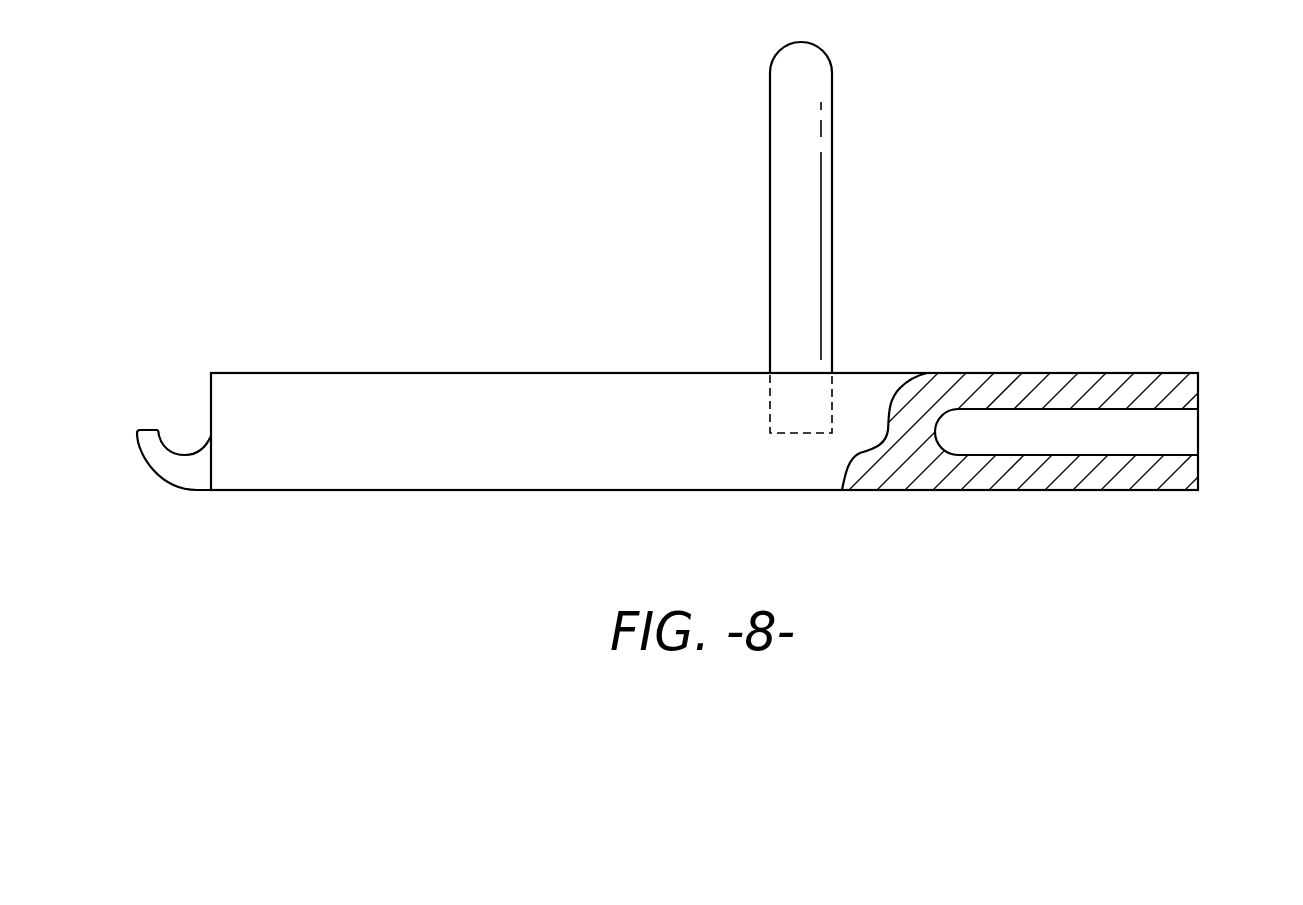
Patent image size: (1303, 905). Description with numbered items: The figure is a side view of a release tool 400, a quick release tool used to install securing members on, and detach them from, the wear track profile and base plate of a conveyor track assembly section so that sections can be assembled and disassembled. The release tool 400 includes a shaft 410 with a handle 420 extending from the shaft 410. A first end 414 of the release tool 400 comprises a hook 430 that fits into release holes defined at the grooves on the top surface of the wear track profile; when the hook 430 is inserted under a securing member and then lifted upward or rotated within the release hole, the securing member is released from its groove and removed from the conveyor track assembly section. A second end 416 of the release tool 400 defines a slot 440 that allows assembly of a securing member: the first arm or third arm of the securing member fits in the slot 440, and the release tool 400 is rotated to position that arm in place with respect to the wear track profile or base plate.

The release tool 400 is at (275, 136).
The shaft 410 is at (457, 393).
The first end 414 is at (110, 482).
The second end 416 is at (1218, 443).
The handle 420 is at (807, 205).
The hook 430 is at (177, 467).
The slot 440 is at (1053, 439).